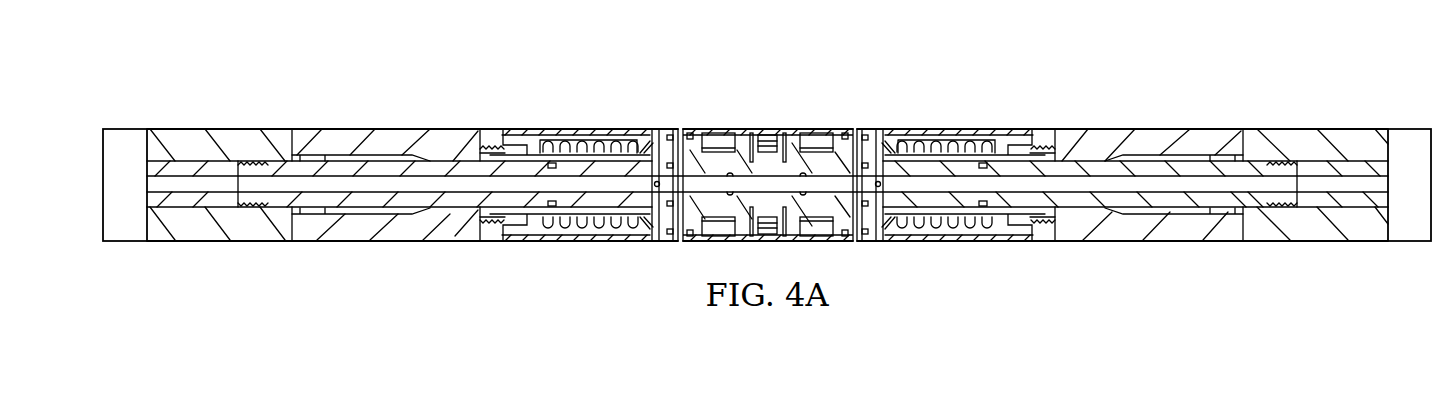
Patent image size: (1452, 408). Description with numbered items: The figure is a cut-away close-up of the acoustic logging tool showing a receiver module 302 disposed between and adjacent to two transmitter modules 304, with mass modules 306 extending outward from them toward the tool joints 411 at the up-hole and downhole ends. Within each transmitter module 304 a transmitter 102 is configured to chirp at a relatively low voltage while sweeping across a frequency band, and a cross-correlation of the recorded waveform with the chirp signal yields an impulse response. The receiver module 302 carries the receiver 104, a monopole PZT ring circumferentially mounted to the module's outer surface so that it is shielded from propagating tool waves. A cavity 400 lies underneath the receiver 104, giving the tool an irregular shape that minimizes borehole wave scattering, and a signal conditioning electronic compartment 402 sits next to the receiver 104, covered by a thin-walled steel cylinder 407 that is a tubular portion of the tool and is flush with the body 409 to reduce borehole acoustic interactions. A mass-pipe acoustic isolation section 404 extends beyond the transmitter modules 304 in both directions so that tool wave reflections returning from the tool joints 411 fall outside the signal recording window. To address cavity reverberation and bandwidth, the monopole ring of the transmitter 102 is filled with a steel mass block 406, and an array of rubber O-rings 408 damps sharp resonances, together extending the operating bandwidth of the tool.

The transmitter 102 is at (585, 130).
The receiver 104 is at (728, 130).
The receiver module 302 is at (690, 75).
The transmitter module 304 is at (512, 261).
The mass module 306 is at (358, 232).
The cavity 400 is at (689, 130).
The signal conditioning electronic compartment 402 is at (794, 131).
The mass-pipe acoustic isolation section 404 is at (340, 170).
The steel mass block 406 is at (432, 176).
The cylinder 407 is at (757, 130).
The O-rings 408 is at (543, 142).
The body 409 is at (623, 236).
The tool joints 411 is at (125, 140).